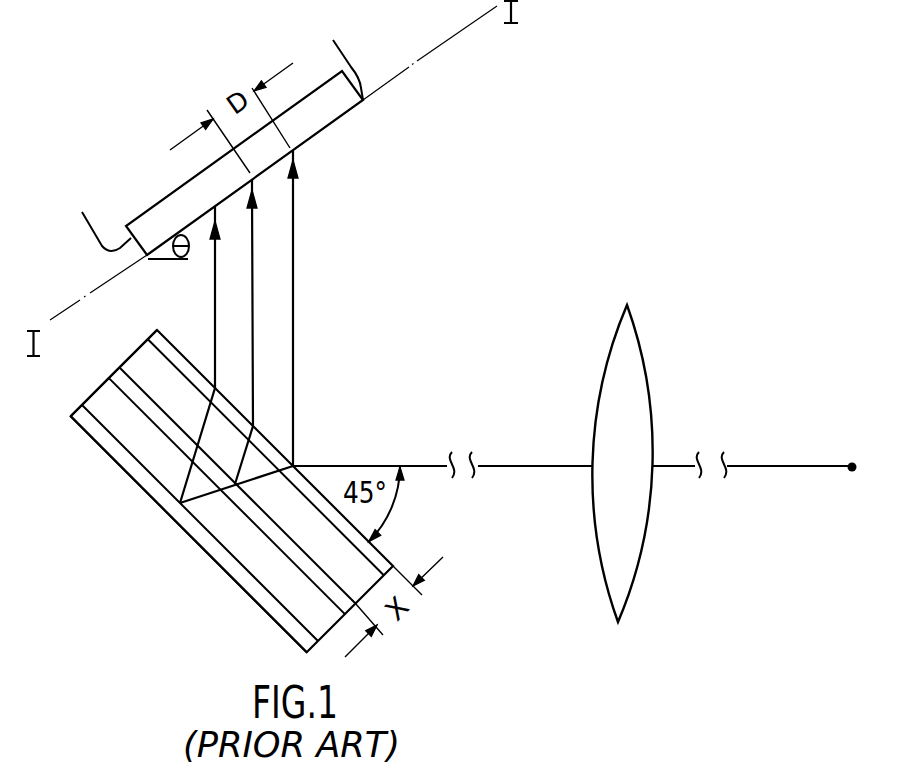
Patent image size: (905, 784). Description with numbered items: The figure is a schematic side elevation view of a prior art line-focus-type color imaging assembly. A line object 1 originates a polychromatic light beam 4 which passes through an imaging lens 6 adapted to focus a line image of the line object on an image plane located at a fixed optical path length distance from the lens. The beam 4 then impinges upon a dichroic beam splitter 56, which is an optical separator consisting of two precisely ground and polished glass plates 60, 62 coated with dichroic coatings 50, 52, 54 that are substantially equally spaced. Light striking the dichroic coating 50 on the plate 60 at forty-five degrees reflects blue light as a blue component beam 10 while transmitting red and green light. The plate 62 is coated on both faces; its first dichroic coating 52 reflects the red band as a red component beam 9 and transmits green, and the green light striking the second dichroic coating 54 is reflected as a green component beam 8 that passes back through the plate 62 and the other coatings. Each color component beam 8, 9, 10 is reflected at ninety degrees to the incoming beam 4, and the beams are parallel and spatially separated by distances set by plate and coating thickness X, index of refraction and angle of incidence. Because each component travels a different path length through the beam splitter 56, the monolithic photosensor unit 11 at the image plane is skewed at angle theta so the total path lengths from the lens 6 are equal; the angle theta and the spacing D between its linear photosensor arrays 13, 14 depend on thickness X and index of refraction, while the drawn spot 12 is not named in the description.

The line object 1 is at (852, 470).
The polychromatic light beam 4 is at (357, 465).
The imaging lens 6 is at (647, 360).
The green color component beam 8 is at (216, 343).
The red color component beam 9 is at (260, 358).
The blue color component beam 10 is at (296, 341).
The monolithic photosensor unit 11 is at (336, 125).
The first beam spot on plate 12 is at (215, 209).
The linear photosensor array 13 is at (257, 180).
The linear photosensor array 14 is at (296, 151).
The dichroic coating 50 is at (163, 341).
The first dichroic coating 52 is at (139, 406).
The second dichroic coating 54 is at (82, 428).
The dichroic beam splitter 56 is at (172, 542).
The glass plate 60 is at (134, 352).
The glass plate 62 is at (92, 402).